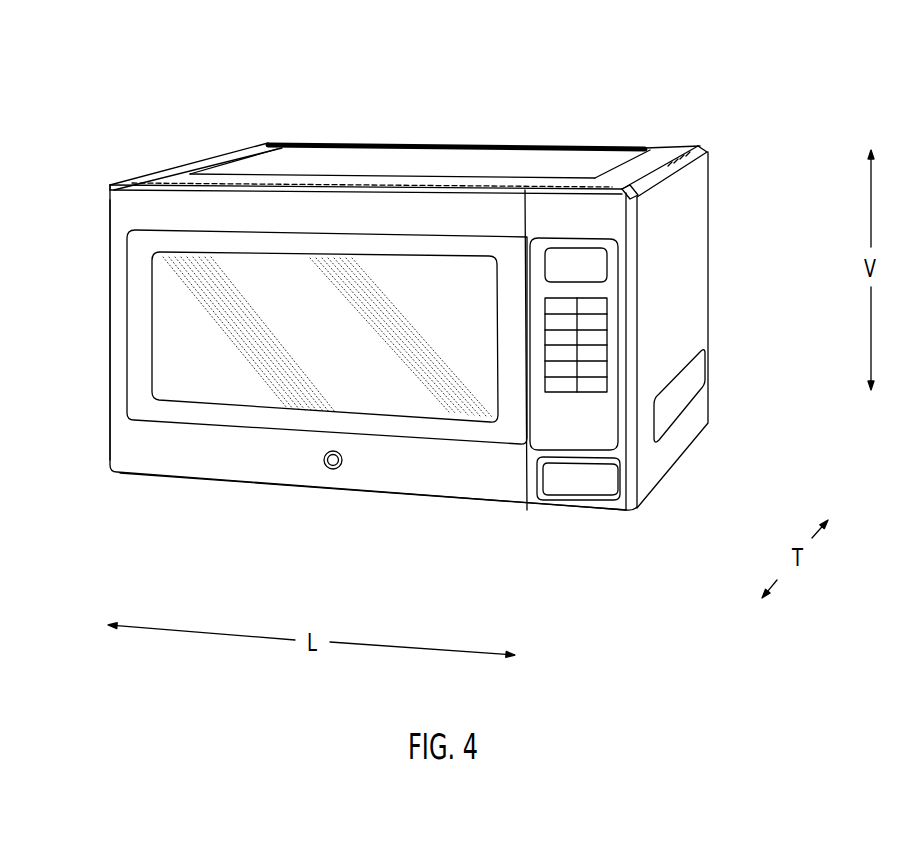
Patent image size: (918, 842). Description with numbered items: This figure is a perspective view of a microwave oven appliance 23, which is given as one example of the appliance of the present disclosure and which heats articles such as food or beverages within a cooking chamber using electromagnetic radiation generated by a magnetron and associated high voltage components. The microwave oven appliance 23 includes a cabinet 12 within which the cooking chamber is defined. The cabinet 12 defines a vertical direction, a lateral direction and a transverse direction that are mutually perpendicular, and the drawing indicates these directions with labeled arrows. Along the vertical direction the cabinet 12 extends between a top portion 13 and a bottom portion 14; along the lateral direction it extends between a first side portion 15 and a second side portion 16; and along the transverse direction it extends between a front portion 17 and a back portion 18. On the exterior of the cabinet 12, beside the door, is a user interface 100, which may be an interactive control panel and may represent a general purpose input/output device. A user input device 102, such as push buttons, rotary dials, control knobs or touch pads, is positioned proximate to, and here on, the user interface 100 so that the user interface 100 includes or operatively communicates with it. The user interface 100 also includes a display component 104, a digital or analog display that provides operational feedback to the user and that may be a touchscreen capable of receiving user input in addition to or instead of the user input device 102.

The microwave oven appliance 23 is at (128, 82).
The cabinet 12 is at (343, 158).
The top portion 13 is at (703, 146).
The bottom portion 14 is at (680, 468).
The first side portion 15 is at (110, 340).
The second side portion 16 is at (683, 274).
The front portion 17 is at (108, 186).
The back portion 18 is at (252, 138).
The user interface 100 is at (585, 432).
The user input device 102 is at (592, 342).
The display component 104 is at (583, 266).